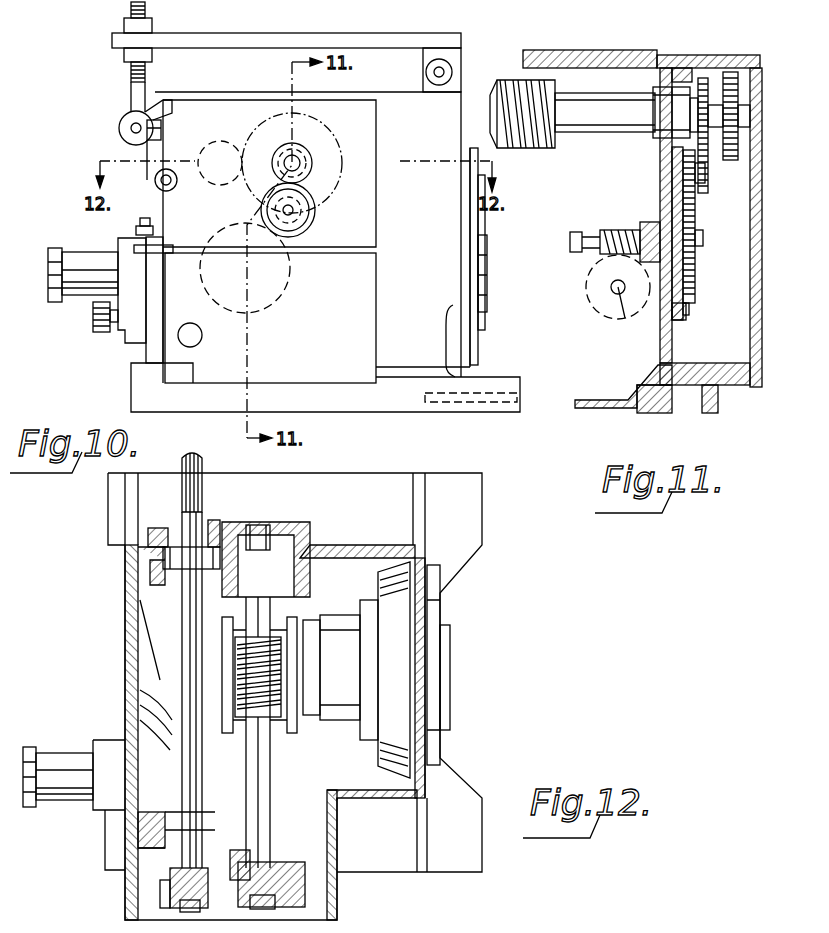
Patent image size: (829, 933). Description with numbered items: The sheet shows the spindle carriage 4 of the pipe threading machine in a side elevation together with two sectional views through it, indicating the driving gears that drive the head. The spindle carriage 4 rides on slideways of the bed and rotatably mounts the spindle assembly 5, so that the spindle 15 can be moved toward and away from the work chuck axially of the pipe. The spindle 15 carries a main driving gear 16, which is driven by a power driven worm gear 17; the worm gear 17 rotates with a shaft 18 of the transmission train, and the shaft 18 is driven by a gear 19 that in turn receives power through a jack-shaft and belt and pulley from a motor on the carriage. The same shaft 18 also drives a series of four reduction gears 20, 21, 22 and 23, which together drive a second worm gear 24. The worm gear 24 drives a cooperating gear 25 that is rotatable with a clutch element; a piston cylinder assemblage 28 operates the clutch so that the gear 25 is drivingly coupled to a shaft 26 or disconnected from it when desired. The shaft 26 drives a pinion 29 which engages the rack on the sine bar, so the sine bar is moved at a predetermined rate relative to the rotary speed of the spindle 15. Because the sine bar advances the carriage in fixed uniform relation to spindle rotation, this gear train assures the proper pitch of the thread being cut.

In FIG. 10, the spindle carriage 4 is at (462, 98).
In FIG. 11, the spindle carriage 4 is at (640, 40).
In FIG. 12, the spindle carriage 4 is at (355, 800).
In FIG. 10, the spindle assembly 5 is at (492, 237).
In FIG. 12, the spindle assembly 5 is at (458, 640).
In FIG. 10, the spindle 15 is at (488, 271).
In FIG. 12, the spindle 15 is at (450, 657).
In FIG. 12, the main driving gear 16 is at (278, 620).
In FIG. 11, the worm gear 17 is at (530, 146).
In FIG. 12, the worm gear 17 is at (272, 725).
In FIG. 10, the shaft 18 is at (318, 136).
In FIG. 11, the shaft 18 is at (620, 136).
In FIG. 12, the shaft 18 is at (273, 774).
In FIG. 10, the gear 19 is at (318, 168).
In FIG. 11, the gear 19 is at (736, 76).
In FIG. 12, the gear 19 is at (305, 897).
In FIG. 10, the reduction gear 20 is at (318, 194).
In FIG. 11, the reduction gear 20 is at (702, 77).
In FIG. 12, the reduction gear 20 is at (340, 670).
In FIG. 10, the reduction gear 21 is at (312, 222).
In FIG. 11, the reduction gear 21 is at (702, 190).
In FIG. 10, the reduction gear 22 is at (300, 228).
In FIG. 11, the reduction gear 22 is at (672, 184).
In FIG. 10, the reduction gear 23 is at (262, 325).
In FIG. 11, the reduction gear 23 is at (696, 287).
In FIG. 11, the worm gear 24 is at (605, 273).
In FIG. 11, the gear 25 is at (595, 320).
In FIG. 11, the shaft 26 is at (612, 322).
In FIG. 10, the piston cylinder assemblage 28 is at (87, 252).
In FIG. 12, the piston cylinder assemblage 28 is at (73, 753).
In FIG. 10, the pinion 29 is at (98, 332).